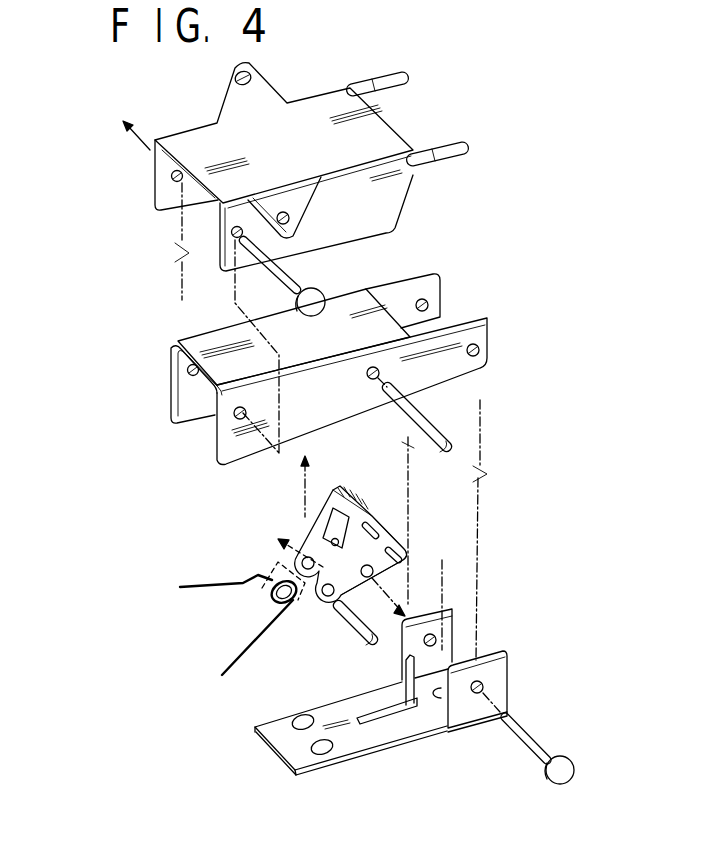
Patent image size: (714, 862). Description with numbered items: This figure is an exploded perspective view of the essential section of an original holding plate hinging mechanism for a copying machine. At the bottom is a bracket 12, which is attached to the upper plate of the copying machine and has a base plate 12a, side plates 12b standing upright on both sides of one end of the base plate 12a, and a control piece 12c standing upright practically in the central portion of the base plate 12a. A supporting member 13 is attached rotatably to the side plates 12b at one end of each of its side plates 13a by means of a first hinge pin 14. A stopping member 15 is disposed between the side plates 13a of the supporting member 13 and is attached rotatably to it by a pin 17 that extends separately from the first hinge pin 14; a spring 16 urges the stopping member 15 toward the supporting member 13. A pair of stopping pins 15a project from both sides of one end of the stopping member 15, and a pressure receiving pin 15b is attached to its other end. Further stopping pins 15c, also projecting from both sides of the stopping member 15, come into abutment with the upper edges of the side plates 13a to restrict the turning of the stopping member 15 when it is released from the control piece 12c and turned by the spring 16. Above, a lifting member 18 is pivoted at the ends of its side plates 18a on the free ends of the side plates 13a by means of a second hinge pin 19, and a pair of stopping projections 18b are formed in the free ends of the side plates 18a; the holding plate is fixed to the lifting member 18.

The bracket 12 is at (413, 698).
The base plate 12a is at (370, 740).
The side plates 12b is at (452, 633).
The control piece 12c is at (405, 674).
The supporting member 13 is at (377, 284).
The side plates 13a is at (437, 290).
The first hinge pin 14 is at (528, 741).
The stopping member 15 is at (307, 530).
The stopping pins 15a is at (405, 556).
The pressure receiving pin 15b is at (348, 622).
The stopping pins 15c is at (333, 492).
The spring 16 is at (273, 600).
The pin 17 is at (437, 431).
The lifting member 18 is at (347, 89).
The side plates 18a is at (153, 202).
The stopping projections 18b is at (400, 72).
The second hinge pin 19 is at (286, 272).